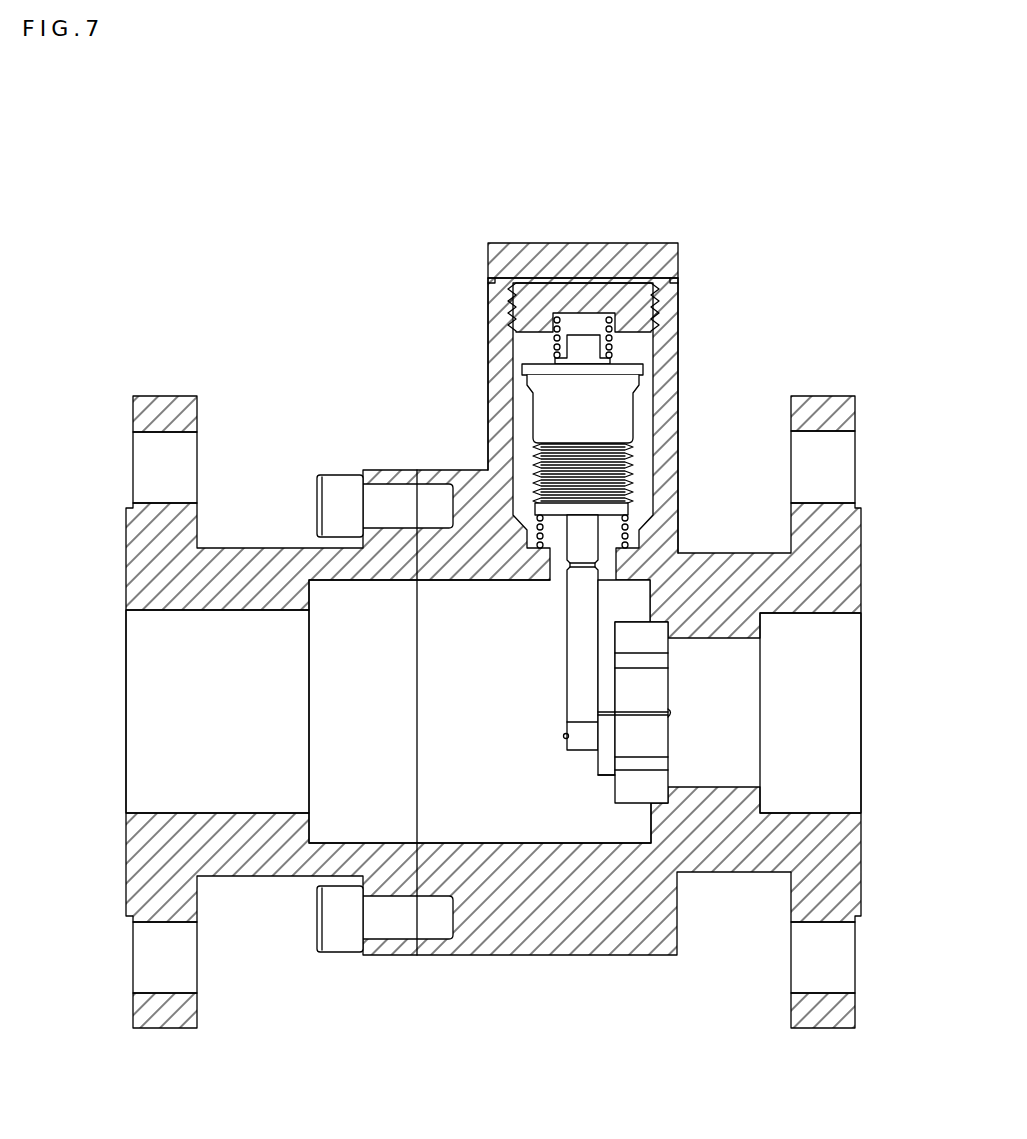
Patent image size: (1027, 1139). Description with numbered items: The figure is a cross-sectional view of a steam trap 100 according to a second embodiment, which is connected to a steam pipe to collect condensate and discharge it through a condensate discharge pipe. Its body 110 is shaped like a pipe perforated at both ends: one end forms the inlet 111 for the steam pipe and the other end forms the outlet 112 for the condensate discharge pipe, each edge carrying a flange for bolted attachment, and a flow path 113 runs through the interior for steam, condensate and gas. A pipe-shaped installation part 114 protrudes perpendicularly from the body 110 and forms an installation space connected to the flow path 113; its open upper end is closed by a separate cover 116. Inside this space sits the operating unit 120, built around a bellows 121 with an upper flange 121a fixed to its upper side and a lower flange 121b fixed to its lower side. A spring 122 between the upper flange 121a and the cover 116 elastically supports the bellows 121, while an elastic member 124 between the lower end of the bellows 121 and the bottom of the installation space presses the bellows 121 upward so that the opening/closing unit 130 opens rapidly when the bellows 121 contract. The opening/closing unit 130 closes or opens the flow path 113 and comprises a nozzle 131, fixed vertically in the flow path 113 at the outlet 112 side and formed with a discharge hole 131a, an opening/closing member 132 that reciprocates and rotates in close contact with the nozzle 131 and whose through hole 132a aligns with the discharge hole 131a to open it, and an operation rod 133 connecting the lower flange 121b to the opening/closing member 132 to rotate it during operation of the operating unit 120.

The steam trap 100 is at (464, 171).
The body 110 is at (265, 850).
The inlet 111 is at (182, 813).
The outlet 112 is at (822, 813).
The flow path 113 is at (507, 812).
The installation part 114 is at (667, 340).
The cover 116 is at (676, 252).
The operating unit 120 is at (380, 356).
The bellows 121 is at (630, 457).
The upper flange 121a is at (655, 361).
The lower flange 121b is at (627, 512).
The spring 122 is at (556, 338).
The elastic member 124 is at (513, 495).
The opening/closing unit 130 is at (672, 1025).
The valve plug 131 is at (657, 806).
The seating surface 131a is at (660, 757).
The stem holder 132 is at (600, 778).
The end portion of stem holder 132a is at (600, 772).
The valve stem 133 is at (567, 603).